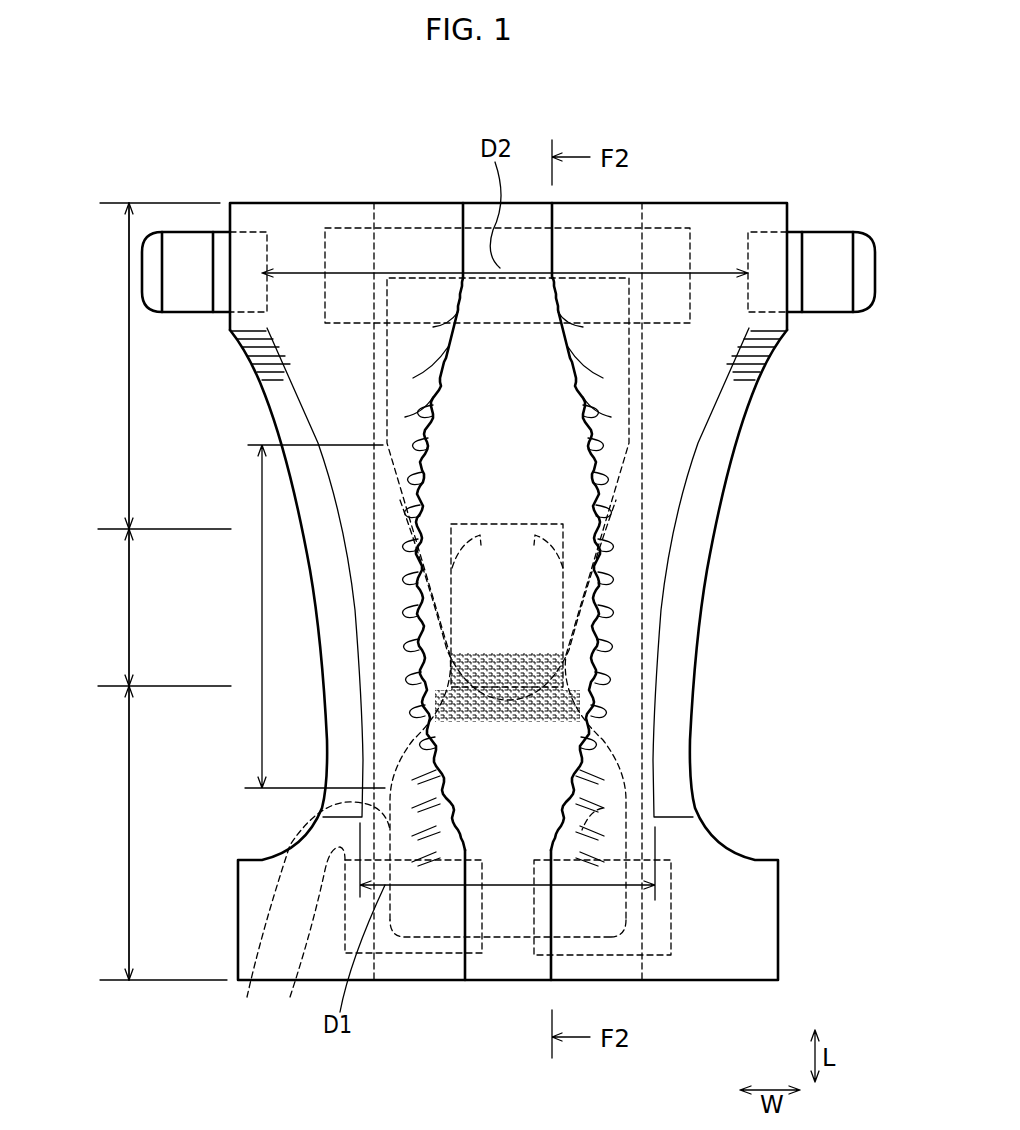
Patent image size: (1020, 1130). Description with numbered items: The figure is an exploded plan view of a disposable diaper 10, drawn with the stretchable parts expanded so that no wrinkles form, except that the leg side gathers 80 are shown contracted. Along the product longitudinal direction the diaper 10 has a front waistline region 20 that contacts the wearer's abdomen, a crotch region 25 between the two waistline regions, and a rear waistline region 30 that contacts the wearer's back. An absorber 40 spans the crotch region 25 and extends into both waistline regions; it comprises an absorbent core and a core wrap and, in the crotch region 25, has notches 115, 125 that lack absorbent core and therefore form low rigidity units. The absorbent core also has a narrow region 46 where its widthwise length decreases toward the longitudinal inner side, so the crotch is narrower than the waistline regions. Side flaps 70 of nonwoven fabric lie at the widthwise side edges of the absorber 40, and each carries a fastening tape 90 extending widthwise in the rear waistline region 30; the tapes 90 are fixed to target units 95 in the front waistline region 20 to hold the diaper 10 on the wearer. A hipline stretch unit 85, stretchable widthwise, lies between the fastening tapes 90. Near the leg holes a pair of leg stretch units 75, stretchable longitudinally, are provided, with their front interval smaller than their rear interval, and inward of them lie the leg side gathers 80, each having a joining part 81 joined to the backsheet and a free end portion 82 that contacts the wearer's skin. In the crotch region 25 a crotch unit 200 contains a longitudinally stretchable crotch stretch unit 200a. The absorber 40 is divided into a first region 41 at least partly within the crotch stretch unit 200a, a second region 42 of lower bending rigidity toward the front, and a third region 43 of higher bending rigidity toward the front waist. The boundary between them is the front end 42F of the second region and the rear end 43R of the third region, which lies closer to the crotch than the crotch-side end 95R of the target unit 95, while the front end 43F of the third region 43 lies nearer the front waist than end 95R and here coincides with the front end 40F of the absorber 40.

The disposable diaper 10 is at (746, 113).
The front waistline region 20 is at (129, 831).
The crotch region 25 is at (129, 608).
The rear waistline region 30 is at (129, 378).
The absorber 40 is at (567, 453).
The end at the front waistline region side of the absorber 40F is at (493, 945).
The first region 41 is at (598, 702).
The second region 42 is at (557, 762).
The end at the front waistline region side of the second region 42F is at (247, 997).
The third region 43 is at (625, 923).
The end at the front waistline region side of the third region 43F is at (452, 960).
The end at the rear waistline region side of the third region 43R is at (603, 808).
The narrow region 46 is at (262, 608).
The side flap 70 is at (713, 222).
The leg stretch unit 75 is at (668, 735).
The leg side gather 80 is at (600, 783).
The joining part 81 is at (658, 424).
The free end portion 82 is at (562, 975).
The hipline stretch unit 85 is at (350, 227).
The fastening tape 90 is at (841, 224).
The target unit 95 is at (400, 960).
The end at the crotch region side of the target unit 95R is at (290, 997).
The notch 115 is at (565, 673).
The notch 125 is at (603, 573).
The crotch unit 200 is at (586, 630).
The crotch stretch unit 200a is at (579, 644).